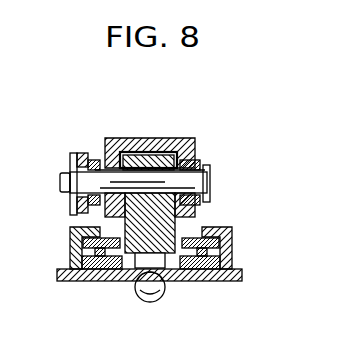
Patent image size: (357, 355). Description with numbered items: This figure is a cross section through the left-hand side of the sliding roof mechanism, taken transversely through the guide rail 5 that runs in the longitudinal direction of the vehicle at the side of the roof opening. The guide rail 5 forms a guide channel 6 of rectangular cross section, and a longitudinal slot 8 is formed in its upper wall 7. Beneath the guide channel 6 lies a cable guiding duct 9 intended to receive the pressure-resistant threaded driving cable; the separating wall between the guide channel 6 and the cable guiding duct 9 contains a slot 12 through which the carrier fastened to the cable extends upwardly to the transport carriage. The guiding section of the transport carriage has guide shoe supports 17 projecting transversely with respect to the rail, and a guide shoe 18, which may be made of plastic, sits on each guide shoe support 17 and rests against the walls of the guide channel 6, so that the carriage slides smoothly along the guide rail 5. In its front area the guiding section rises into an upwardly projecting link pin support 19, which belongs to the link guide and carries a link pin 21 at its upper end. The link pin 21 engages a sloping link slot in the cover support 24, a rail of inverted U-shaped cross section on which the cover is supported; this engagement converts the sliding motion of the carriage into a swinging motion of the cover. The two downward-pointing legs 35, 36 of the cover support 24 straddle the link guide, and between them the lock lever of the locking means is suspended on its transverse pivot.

The guide rail 5 is at (228, 244).
The guide channel 6 is at (205, 227).
The upper wall 7 is at (88, 228).
The longitudinal slot 8 is at (182, 231).
The cable guiding duct 9 is at (165, 286).
The slot 12 is at (137, 286).
The guide shoe support 17 is at (90, 250).
The guide shoe 18 is at (95, 281).
The link pin support 19 is at (143, 163).
The link pin 21 is at (205, 178).
The cover support 24 is at (168, 143).
The leg 35 is at (103, 160).
The leg 36 is at (197, 157).